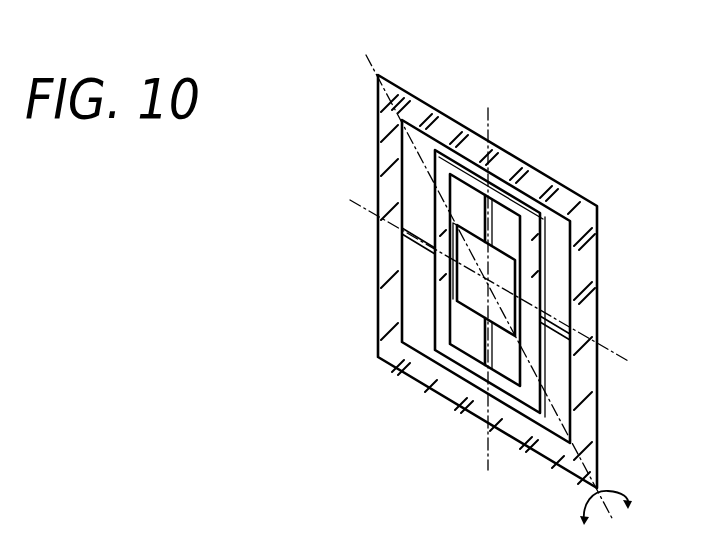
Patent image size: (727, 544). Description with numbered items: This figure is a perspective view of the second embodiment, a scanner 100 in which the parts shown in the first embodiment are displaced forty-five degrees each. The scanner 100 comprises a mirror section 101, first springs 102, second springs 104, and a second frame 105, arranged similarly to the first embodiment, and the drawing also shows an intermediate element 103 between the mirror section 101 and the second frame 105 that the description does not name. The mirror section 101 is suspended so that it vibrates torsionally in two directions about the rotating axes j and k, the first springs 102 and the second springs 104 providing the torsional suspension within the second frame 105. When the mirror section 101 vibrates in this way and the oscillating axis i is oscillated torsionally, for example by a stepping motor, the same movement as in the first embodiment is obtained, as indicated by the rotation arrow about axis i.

The scanner 100 is at (441, 83).
The mirror section 101 is at (505, 275).
The first springs 102 is at (516, 190).
The movable frame 103 is at (597, 208).
The second springs 104 is at (437, 248).
The second frame 105 is at (588, 307).